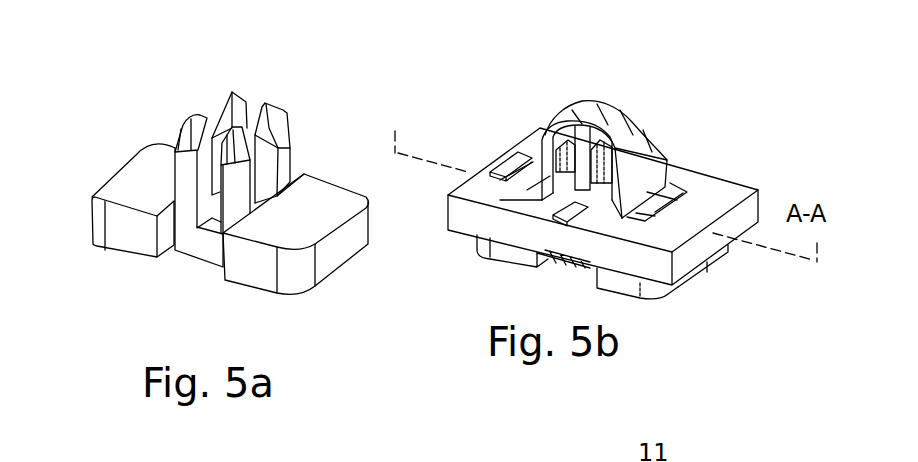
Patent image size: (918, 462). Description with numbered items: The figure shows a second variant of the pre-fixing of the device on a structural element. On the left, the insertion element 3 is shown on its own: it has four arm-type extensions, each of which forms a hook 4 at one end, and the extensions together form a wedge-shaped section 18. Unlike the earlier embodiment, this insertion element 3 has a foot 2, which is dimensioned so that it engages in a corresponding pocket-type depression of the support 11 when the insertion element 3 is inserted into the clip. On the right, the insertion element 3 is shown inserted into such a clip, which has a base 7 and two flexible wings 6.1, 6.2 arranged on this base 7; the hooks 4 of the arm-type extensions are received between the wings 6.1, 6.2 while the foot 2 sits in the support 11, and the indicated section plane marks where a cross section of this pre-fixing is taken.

In FIG. 5A, the foot 2 is at (257, 272).
In FIG. 5A, the insertion element 3 is at (213, 138).
In FIG. 5A, the hook 4 is at (273, 120).
In FIG. 5A, the wedge-shaped section 18 is at (187, 185).
In FIG. 5B, the flexible wing 6.1 is at (550, 147).
In FIG. 5B, the flexible wing 6.2 is at (647, 152).
In FIG. 5B, the base 7 is at (592, 132).
In FIG. 5B, the support 11 is at (708, 197).